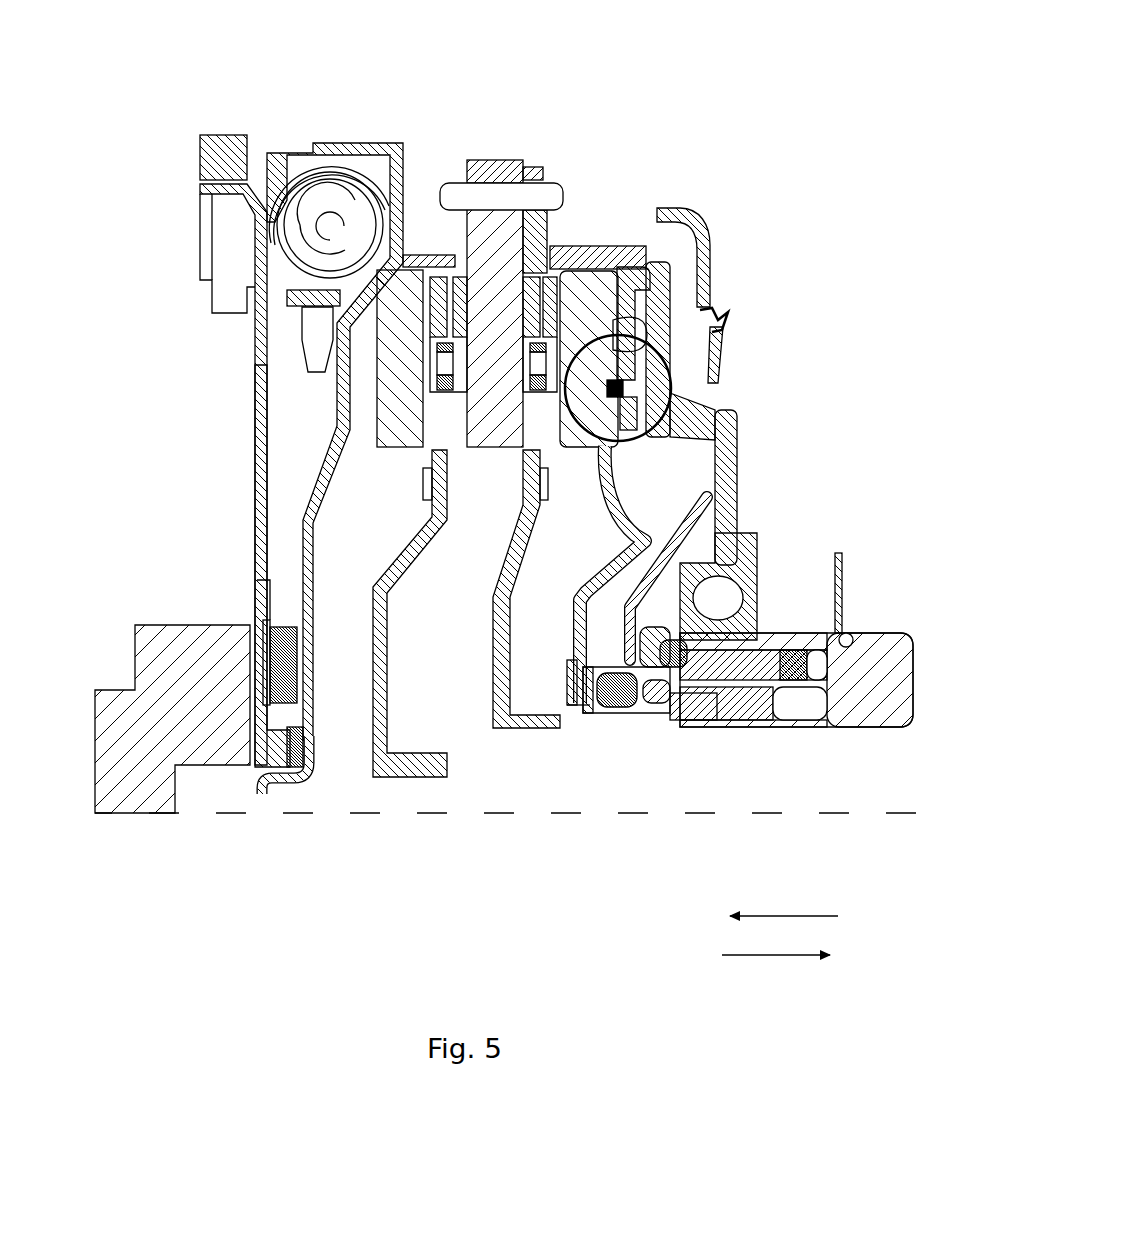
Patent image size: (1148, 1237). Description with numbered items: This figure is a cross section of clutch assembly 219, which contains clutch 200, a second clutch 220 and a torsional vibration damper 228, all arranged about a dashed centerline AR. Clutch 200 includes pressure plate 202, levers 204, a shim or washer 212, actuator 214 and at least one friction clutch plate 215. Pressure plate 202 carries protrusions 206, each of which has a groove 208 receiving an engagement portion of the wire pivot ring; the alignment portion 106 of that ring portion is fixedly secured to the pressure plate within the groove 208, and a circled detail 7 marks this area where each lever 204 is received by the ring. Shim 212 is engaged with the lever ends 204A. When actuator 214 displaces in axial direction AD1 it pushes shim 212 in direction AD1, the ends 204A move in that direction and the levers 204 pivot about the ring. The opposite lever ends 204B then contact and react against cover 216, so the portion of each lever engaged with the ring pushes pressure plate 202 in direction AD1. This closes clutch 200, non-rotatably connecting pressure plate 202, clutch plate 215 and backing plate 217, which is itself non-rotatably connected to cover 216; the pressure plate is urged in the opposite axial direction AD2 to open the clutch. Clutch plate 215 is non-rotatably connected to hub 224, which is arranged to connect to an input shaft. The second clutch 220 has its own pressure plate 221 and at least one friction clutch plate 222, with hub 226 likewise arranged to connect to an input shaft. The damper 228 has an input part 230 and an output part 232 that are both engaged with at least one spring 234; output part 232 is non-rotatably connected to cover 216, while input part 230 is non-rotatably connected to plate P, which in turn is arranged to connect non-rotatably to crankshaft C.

The torsional vibration damper 228 is at (318, 140).
The clutch plate 222 is at (457, 266).
The spring 234 is at (313, 190).
The pressure plate 221 is at (410, 292).
The clutch 220 is at (430, 250).
The backing plate 217 is at (503, 165).
The clutch assembly 219 is at (740, 98).
The clutch plate 215 is at (548, 262).
The pressure plate 202 is at (593, 297).
The lever end 204B is at (640, 355).
The groove 208 is at (622, 373).
The protrusion 206 is at (636, 375).
The alignment portion 106 is at (624, 390).
The detail view circle 7 is at (671, 392).
The lever 204 is at (610, 495).
The cover 216 is at (737, 457).
The input part 230 is at (253, 350).
The plate P is at (253, 407).
The clutch 200 is at (588, 456).
The lever end 204A is at (630, 540).
The output part 232 is at (303, 530).
The shim 212 is at (605, 580).
The crankshaft C is at (135, 660).
The actuator 214 is at (632, 724).
The hub 226 is at (372, 756).
The hub 224 is at (524, 722).
The axis of rotation AR is at (637, 813).
The axial direction AD1 is at (758, 916).
The axial direction AD2 is at (780, 955).